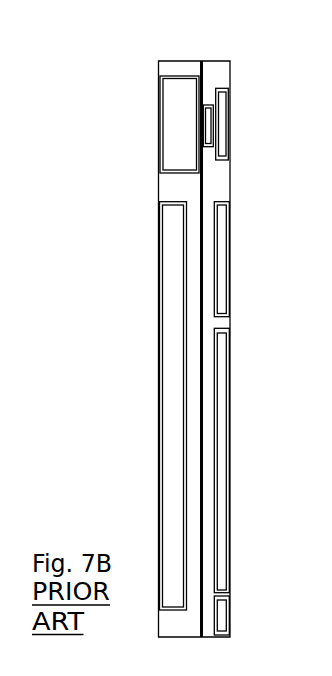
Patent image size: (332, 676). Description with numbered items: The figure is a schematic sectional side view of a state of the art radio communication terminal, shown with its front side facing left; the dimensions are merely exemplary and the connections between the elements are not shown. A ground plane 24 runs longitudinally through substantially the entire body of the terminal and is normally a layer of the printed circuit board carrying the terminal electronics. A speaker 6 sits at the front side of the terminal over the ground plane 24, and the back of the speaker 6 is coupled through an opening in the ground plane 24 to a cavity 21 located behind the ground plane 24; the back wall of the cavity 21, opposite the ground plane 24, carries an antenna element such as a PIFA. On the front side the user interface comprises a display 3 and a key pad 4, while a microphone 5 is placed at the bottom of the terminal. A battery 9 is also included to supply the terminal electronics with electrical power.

The ground plane 24 is at (203, 75).
The cavity 21 is at (172, 103).
The battery 9 is at (172, 243).
The speaker 6 is at (229, 148).
The display 3 is at (232, 237).
The key pad 4 is at (232, 367).
The microphone 5 is at (232, 612).